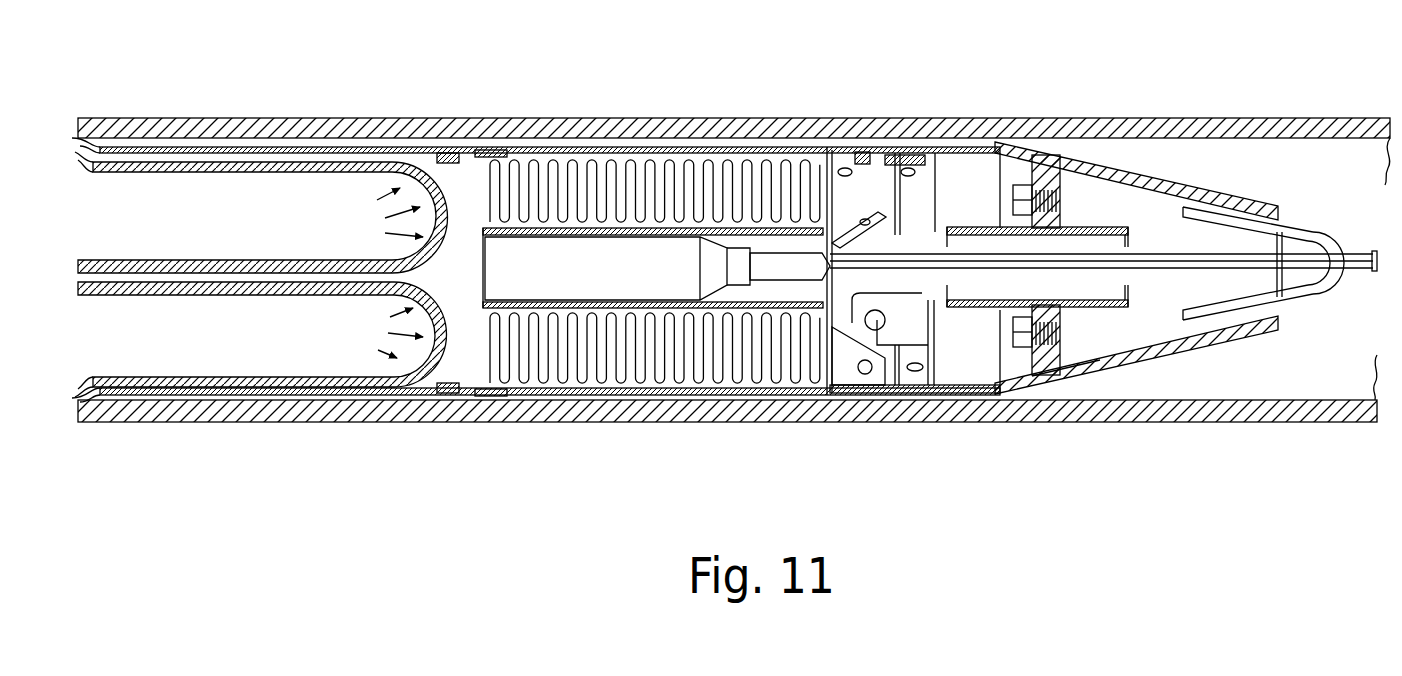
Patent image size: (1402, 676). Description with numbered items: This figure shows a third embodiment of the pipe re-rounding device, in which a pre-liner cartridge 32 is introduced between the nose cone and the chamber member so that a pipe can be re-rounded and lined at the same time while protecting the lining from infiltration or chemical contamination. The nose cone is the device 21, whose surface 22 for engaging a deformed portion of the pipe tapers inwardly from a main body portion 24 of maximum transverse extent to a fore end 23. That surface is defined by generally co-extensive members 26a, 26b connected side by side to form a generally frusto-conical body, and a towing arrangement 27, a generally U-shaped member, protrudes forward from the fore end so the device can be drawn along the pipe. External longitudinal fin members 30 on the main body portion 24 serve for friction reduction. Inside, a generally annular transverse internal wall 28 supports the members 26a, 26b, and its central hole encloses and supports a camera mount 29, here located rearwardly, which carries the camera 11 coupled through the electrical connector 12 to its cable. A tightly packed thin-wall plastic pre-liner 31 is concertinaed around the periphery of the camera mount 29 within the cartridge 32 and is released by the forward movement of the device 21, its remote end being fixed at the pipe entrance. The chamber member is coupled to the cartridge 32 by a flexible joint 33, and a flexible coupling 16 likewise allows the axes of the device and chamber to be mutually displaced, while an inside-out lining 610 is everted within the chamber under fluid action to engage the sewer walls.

The camera 11 is at (617, 258).
The electrical connector 12 is at (1170, 255).
The flexible coupling 16 is at (903, 158).
The device 21 is at (1145, 376).
The surface 22 is at (1068, 153).
The fore end 23 is at (1317, 297).
The main body portion 24 is at (1002, 397).
The co-extensive member 26a is at (1215, 322).
The co-extensive member 26b is at (1255, 207).
The towing arrangement 27 is at (1333, 290).
The annular transverse internal wall 28 is at (1065, 382).
The camera mount 29 is at (978, 228).
The fin members 30 is at (1020, 185).
The pre-liner 31 is at (612, 375).
The pre-liner cartridge 32 is at (675, 400).
The flexible joint 33 is at (468, 396).
The inside-out lining 610 is at (282, 296).